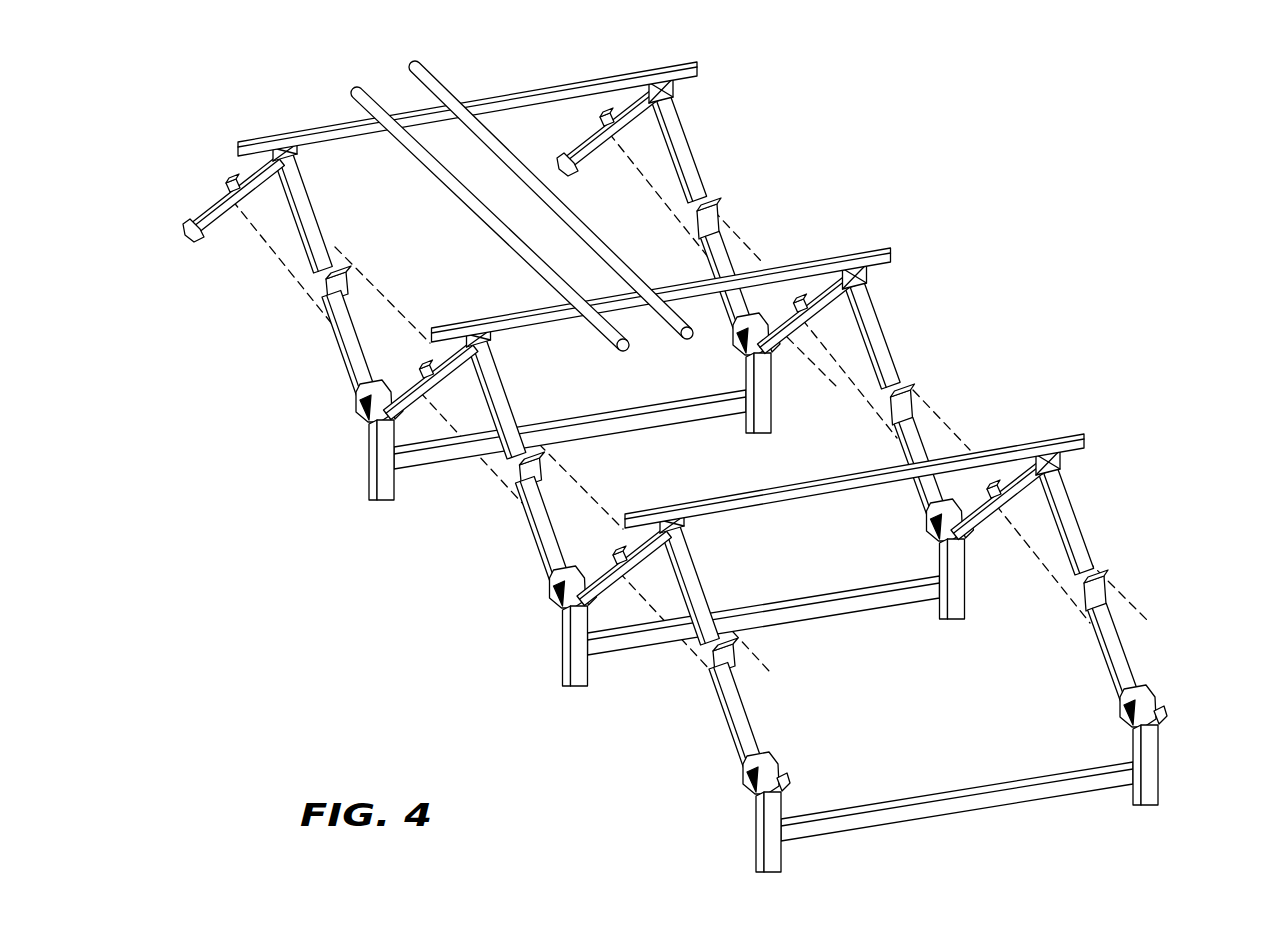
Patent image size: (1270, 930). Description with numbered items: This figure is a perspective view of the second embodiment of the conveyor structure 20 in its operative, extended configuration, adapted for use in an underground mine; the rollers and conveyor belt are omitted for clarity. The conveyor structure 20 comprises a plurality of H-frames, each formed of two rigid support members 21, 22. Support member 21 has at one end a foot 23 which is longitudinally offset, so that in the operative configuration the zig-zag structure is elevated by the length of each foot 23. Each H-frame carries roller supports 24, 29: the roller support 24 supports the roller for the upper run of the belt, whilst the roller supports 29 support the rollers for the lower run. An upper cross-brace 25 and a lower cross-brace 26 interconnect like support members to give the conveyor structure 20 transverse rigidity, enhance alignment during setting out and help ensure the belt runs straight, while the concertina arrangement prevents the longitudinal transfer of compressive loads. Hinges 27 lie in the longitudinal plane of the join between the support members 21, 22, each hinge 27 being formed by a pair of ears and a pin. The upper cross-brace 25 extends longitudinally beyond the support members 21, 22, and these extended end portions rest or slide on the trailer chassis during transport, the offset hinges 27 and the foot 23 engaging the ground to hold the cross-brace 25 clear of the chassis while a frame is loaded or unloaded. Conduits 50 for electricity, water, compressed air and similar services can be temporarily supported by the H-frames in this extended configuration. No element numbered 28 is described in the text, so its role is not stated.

The conveyor structure 20 is at (716, 454).
The support member 21 is at (547, 542).
The support member 22 is at (580, 605).
The foot 23 is at (557, 680).
The roller support 24 is at (516, 488).
The upper cross-brace 25 is at (698, 70).
The lower cross-brace 26 is at (790, 612).
The hinge 27 is at (542, 622).
The hook 28 is at (684, 546).
The roller support 29 is at (366, 398).
The conduit 50 is at (413, 68).